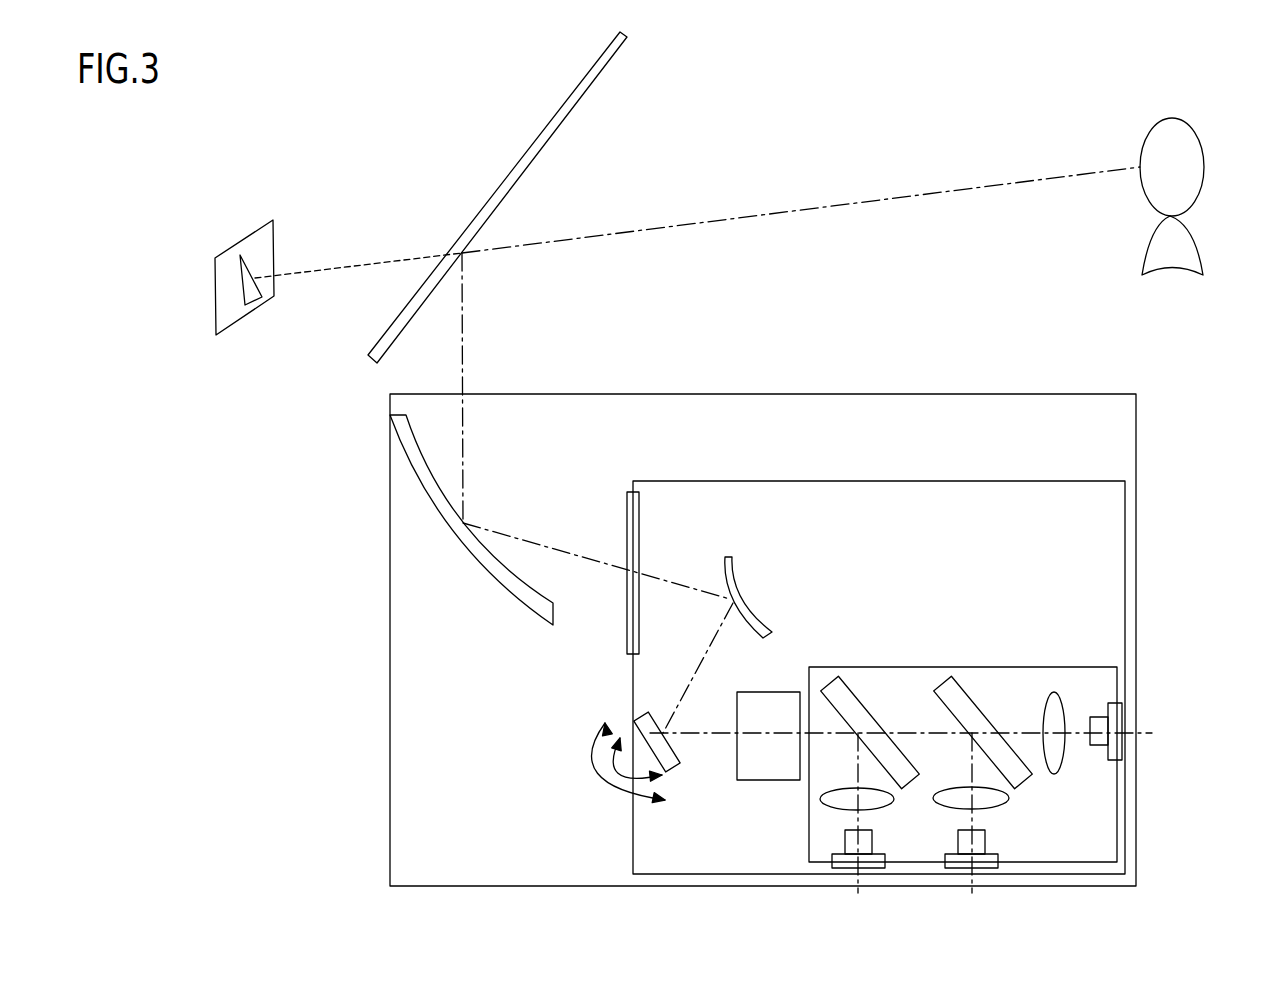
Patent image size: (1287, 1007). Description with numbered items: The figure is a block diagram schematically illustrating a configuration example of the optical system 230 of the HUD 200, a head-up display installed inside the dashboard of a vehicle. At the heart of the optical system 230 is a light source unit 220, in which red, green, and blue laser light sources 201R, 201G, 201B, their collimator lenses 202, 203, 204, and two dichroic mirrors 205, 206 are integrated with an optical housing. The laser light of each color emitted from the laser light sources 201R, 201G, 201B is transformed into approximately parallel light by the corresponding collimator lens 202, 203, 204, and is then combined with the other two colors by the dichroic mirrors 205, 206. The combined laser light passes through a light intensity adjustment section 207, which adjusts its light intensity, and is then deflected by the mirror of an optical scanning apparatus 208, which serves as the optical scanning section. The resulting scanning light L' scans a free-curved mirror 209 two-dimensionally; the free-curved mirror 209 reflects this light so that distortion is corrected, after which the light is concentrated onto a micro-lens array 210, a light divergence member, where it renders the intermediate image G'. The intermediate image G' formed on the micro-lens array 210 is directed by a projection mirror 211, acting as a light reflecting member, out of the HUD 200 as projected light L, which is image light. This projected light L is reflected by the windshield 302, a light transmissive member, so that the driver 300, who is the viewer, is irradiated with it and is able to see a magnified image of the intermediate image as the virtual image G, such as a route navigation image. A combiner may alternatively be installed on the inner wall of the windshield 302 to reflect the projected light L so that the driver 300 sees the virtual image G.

The driver 300 is at (1172, 118).
The windshield 302 is at (537, 133).
The HUD 200 is at (1155, 512).
The optical system 230 is at (390, 660).
The projection mirror 211 is at (417, 483).
The micro-lens array 210 is at (627, 510).
The free-curved mirror 209 is at (741, 573).
The optical scanning apparatus 208 is at (677, 763).
The light intensity adjustment section 207 is at (770, 692).
The light source unit 220 is at (1095, 667).
The dichroic mirror 206 is at (860, 697).
The dichroic mirror 205 is at (970, 697).
The collimator lens 204 is at (818, 800).
The collimator lens 203 is at (1010, 795).
The collimator lens 202 is at (1053, 693).
The red laser light source 201R is at (1122, 715).
The green laser light source 201G is at (990, 868).
The blue laser light source 201B is at (843, 868).
The virtual image G is at (338, 259).
The intermediate image G' is at (682, 491).
The projected light L is at (801, 383).
The scanning light L' is at (901, 668).